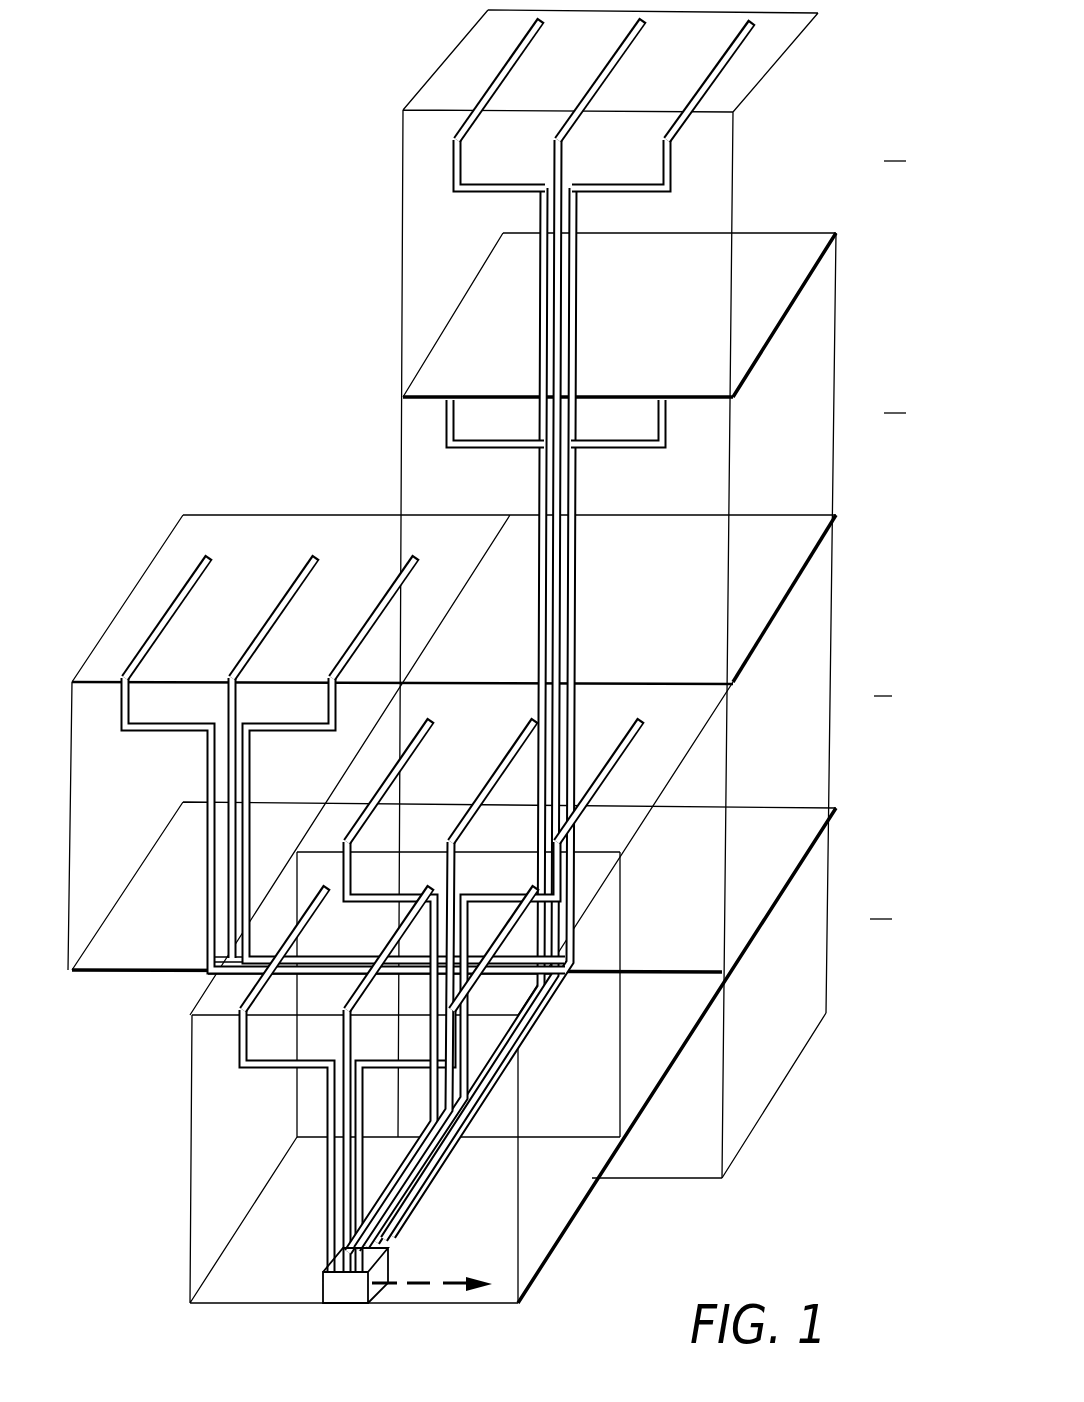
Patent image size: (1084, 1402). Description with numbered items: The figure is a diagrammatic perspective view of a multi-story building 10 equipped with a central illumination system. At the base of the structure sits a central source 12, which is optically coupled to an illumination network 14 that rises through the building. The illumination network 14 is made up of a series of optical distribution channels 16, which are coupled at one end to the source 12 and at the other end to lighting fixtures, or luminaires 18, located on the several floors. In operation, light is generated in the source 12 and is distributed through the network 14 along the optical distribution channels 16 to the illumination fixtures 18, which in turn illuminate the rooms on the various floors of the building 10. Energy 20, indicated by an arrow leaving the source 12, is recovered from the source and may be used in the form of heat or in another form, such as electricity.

The multi-story building 10 is at (196, 405).
The central source 12 is at (343, 1292).
The illumination network 14 is at (634, 491).
The optical distribution channels 16 is at (640, 193).
The lighting fixtures 18 is at (614, 80).
The energy 20 is at (412, 1285).